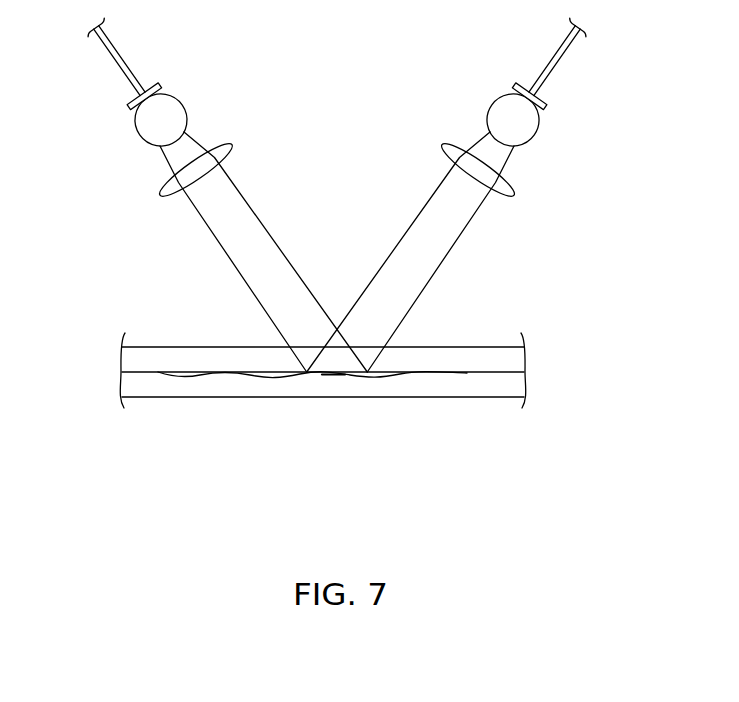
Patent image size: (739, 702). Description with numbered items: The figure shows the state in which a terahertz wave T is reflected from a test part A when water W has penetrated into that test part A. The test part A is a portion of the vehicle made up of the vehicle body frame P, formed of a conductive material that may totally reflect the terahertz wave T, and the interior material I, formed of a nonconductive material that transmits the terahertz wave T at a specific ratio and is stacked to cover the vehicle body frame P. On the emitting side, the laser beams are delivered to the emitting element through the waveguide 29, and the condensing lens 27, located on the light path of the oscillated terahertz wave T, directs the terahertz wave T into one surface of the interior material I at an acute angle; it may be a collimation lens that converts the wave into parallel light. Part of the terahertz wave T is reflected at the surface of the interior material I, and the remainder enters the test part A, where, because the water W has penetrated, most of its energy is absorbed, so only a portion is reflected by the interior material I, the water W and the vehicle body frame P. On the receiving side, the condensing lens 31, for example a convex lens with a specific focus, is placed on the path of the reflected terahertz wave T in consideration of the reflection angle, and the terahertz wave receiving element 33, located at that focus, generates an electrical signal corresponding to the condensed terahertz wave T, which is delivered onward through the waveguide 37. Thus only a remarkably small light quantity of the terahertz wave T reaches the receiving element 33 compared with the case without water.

The condensing lens 27 is at (164, 90).
The waveguide 29 is at (116, 66).
The condensing lens 31 is at (443, 146).
The terahertz wave receiving element 33 is at (511, 90).
The waveguide 37 is at (560, 66).
The terahertz wave T is at (250, 204).
The vehicle body frame P is at (492, 388).
The interior material I is at (492, 358).
The water W is at (219, 378).
The test part A is at (448, 329).